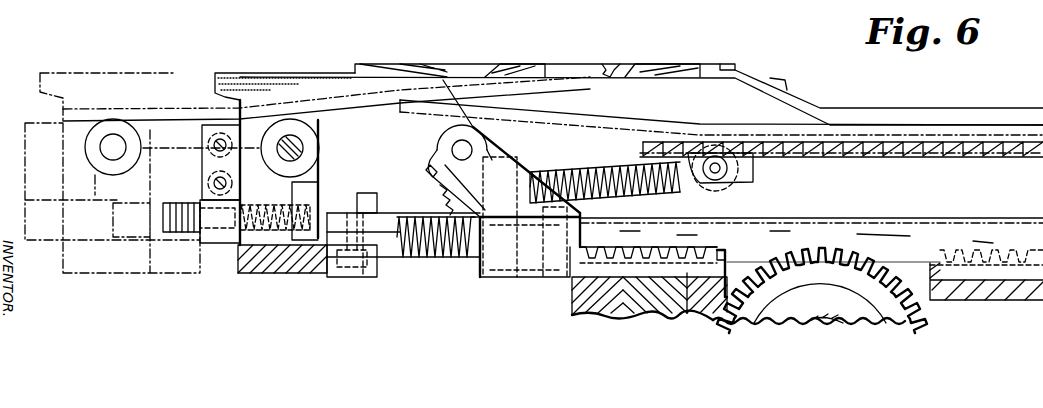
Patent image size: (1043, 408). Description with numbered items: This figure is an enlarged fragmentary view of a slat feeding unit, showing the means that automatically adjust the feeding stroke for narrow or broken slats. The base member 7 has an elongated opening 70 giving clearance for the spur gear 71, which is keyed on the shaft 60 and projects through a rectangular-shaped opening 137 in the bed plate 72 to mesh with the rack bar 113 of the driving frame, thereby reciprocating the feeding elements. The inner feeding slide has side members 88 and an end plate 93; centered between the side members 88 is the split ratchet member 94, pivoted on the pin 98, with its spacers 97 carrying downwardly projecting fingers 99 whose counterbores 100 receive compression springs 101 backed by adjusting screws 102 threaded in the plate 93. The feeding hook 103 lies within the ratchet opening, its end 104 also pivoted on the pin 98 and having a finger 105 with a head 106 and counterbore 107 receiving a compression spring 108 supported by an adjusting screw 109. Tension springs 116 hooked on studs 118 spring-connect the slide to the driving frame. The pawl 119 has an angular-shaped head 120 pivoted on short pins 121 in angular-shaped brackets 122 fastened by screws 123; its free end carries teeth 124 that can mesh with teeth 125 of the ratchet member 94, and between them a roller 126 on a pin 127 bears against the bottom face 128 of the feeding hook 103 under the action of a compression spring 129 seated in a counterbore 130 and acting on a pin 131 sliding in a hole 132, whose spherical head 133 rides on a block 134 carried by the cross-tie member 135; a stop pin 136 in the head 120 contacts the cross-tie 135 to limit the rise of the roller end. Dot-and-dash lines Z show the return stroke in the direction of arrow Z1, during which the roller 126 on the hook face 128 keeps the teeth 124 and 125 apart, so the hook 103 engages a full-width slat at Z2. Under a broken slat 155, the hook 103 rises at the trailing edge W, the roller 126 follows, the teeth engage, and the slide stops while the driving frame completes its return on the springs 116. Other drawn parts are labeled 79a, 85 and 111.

The base member 7 is at (1002, 297).
The shaft 60 is at (830, 318).
The elongated opening 70 is at (930, 287).
The spur gear 71 is at (833, 263).
The bed plate 72 is at (649, 297).
The stop block 79a is at (245, 75).
The carriage housing 85 is at (117, 267).
The side members 88 is at (380, 150).
The plate 93 is at (28, 137).
The split ratchet member 94 is at (343, 87).
The spacers 97 is at (108, 127).
The pin 98 is at (103, 140).
The fingers 99 is at (117, 190).
The counterbores 100 is at (320, 200).
The compression springs 101 is at (238, 250).
The adjusting screws 102 is at (177, 233).
The feeding hook 103 is at (473, 48).
The end of feeding hook 104 is at (300, 124).
The finger 105 is at (347, 277).
The head 106 is at (300, 273).
The counterbore 107 is at (265, 273).
The compression spring 108 is at (280, 205).
The adjusting screw 109 is at (182, 200).
The rod 111 is at (363, 277).
The rack bar 113 is at (935, 228).
The tension springs 116 is at (413, 250).
The studs 118 is at (370, 227).
The pawl 119 is at (613, 160).
The angular-shaped head 120 is at (472, 132).
The short pins 121 is at (460, 142).
The angular-shaped brackets 122 is at (507, 131).
The screws 123 is at (567, 273).
The teeth 124 is at (733, 140).
The teeth 125 is at (819, 158).
The roller 126 is at (697, 122).
The pin 127 is at (718, 178).
The bottom face 128 is at (800, 142).
The compression spring 129 is at (600, 232).
The counterbore 130 is at (672, 193).
The pin 131 is at (548, 158).
The hole 132 is at (592, 160).
The spherical head 133 is at (527, 160).
The block 134 is at (440, 143).
The cross-tie member 135 is at (443, 178).
The stop pin 136 is at (430, 168).
The rectangular-shaped opening 137 is at (737, 250).
The slat 155 is at (515, 73).
The trailing edge W is at (610, 64).
The return stroke position Z is at (103, 73).
The arrow Z1 is at (184, 144).
The feeding hook position Z2 is at (723, 66).